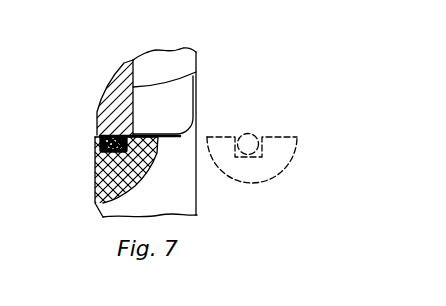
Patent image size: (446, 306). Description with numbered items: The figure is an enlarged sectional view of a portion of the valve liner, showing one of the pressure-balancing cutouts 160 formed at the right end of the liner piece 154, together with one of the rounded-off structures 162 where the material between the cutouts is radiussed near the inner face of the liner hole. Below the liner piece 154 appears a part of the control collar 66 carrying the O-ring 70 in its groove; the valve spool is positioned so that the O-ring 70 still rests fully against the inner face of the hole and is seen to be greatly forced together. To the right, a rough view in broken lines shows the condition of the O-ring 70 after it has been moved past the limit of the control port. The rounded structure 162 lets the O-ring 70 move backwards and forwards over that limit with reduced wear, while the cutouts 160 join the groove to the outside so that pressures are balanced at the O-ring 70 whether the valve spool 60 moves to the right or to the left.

The liner piece 154 is at (120, 123).
The pressure-balancing cutouts 160 is at (196, 72).
The rounded-off structure 162 is at (198, 137).
The O-ring 70 is at (102, 150).
The control collar 66 is at (102, 190).
The valve spool 60 is at (273, 159).